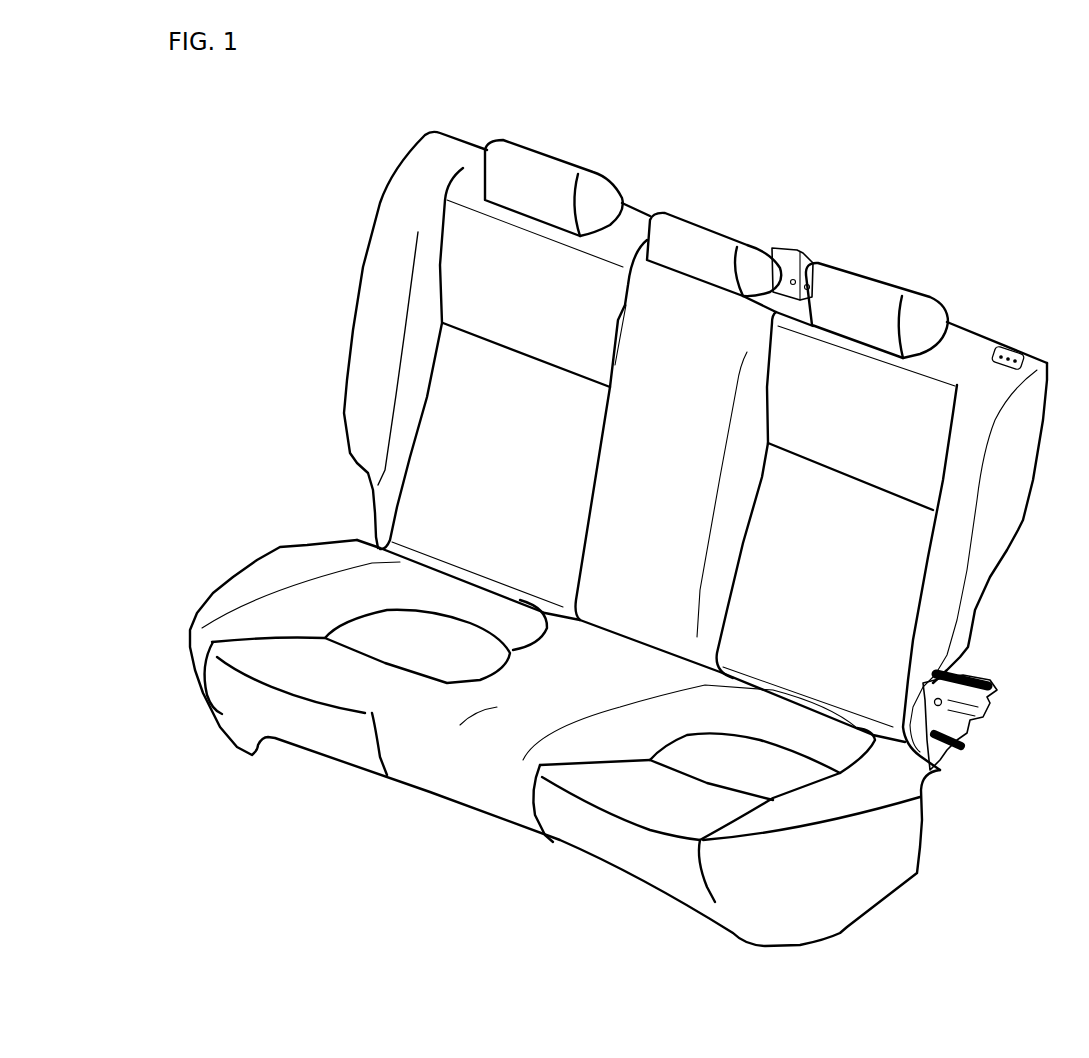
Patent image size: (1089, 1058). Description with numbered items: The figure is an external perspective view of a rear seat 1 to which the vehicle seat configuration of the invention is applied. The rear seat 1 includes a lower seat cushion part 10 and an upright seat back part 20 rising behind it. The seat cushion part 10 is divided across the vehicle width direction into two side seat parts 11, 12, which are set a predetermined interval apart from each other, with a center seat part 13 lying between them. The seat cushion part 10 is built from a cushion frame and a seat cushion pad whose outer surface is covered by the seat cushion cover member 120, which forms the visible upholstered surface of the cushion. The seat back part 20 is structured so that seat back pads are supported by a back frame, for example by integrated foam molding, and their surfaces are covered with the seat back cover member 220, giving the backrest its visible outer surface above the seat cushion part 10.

The rear seat 1 is at (748, 196).
The seat cushion part 10 is at (248, 558).
The side seat part 11 is at (645, 798).
The side seat part 12 is at (343, 687).
The center seat part 13 is at (460, 725).
The seat cushion cover member 120 is at (793, 805).
The seat back part 20 is at (343, 414).
The seat back cover member 220 is at (903, 545).